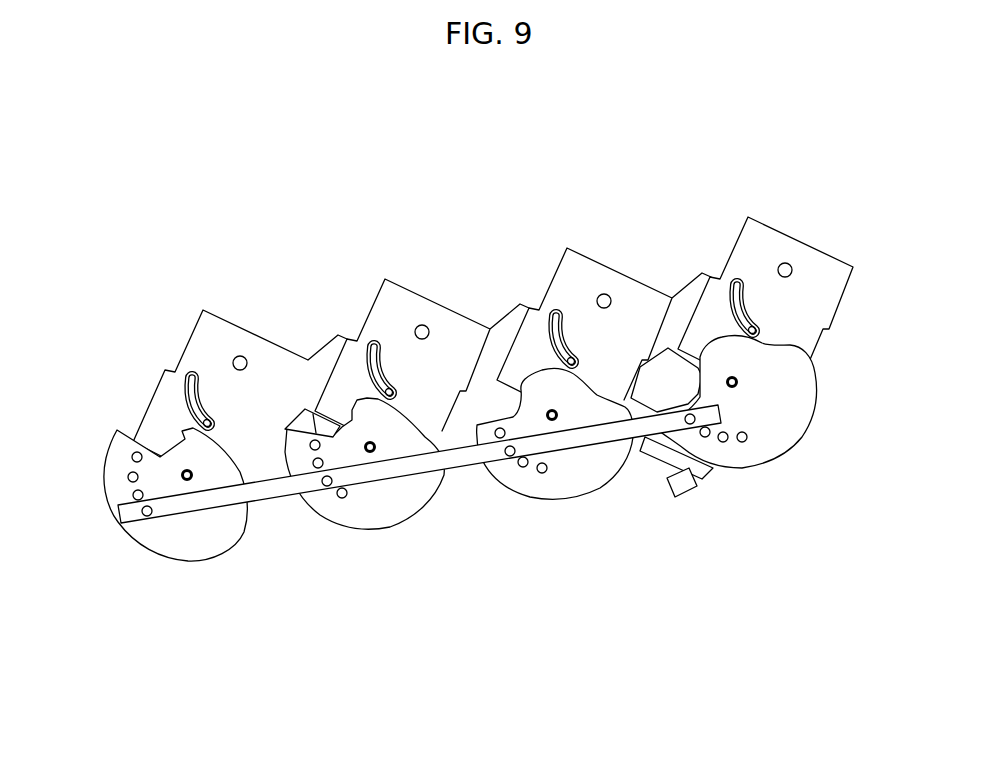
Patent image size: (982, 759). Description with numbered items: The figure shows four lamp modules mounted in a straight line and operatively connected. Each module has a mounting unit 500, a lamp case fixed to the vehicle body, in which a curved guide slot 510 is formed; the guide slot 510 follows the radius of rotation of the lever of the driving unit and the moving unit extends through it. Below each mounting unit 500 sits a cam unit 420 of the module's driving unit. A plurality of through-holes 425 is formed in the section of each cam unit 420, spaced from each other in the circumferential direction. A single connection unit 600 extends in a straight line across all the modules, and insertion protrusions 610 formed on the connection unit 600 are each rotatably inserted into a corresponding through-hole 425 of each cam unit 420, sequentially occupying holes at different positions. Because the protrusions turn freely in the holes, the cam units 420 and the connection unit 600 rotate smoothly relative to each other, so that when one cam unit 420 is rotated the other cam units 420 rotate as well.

The cam unit 420 is at (198, 543).
The through-hole 425 is at (127, 480).
The mounting unit 500 is at (782, 246).
The guide slot 510 is at (745, 288).
The connection unit 600 is at (462, 460).
The insertion protrusion 610 is at (147, 517).